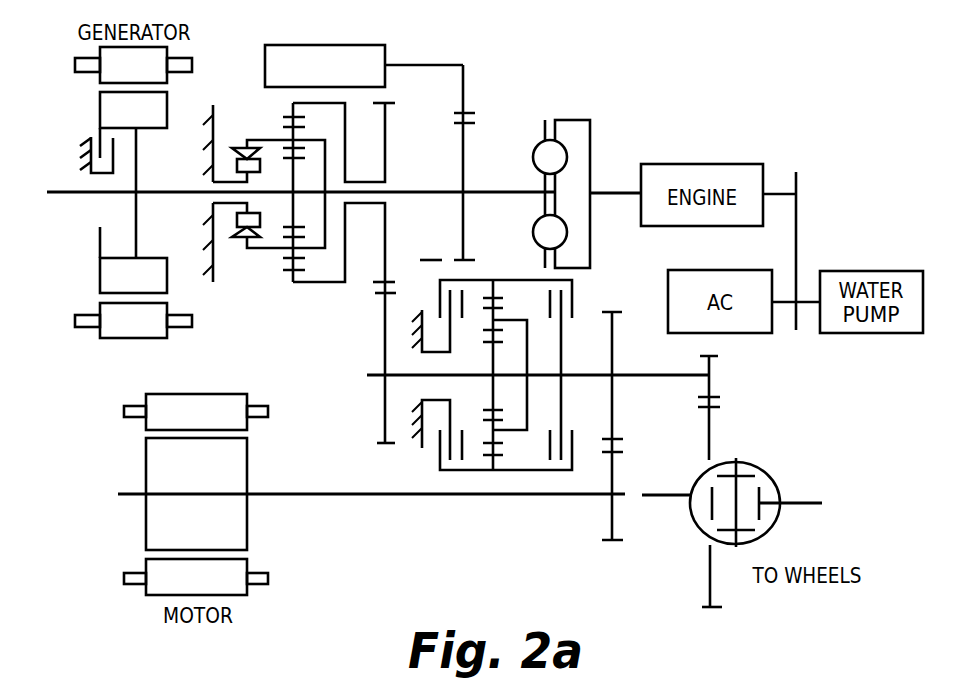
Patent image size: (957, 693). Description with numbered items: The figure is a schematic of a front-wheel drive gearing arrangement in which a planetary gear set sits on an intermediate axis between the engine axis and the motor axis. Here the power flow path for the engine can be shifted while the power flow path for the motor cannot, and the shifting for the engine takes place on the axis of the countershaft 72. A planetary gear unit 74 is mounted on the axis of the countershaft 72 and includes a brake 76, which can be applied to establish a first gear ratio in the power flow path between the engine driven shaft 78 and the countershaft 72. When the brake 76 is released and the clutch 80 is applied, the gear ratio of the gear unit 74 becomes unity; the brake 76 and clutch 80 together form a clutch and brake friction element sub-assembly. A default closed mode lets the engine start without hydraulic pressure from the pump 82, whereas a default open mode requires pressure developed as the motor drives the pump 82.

The countershaft 72 is at (583, 373).
The planetary gear unit 74 is at (495, 276).
The brake 76 is at (452, 302).
The engine driven shaft 78 is at (432, 192).
The clutch 80 is at (556, 416).
The pump 82 is at (265, 64).